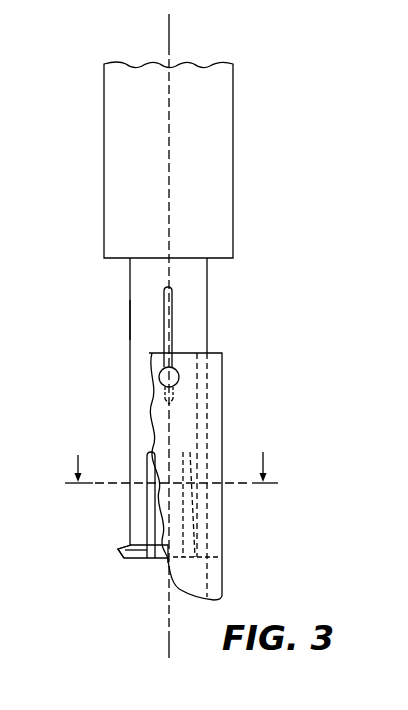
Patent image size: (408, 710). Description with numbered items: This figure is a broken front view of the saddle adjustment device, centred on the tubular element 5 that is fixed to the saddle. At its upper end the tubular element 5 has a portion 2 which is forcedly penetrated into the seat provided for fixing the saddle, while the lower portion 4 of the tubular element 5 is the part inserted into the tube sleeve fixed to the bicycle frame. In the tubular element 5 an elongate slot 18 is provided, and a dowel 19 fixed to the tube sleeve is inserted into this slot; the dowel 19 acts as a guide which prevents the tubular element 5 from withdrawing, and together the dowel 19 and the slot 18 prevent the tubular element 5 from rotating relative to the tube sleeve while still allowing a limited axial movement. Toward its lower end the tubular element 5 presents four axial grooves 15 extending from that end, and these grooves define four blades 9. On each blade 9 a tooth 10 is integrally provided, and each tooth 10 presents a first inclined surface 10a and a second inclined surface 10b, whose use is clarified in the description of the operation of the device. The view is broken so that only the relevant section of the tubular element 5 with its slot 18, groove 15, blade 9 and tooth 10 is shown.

The portion of the tubular element 2 is at (158, 30).
The portion of the tubular element 4 is at (145, 327).
The tubular element 5 is at (215, 299).
The blade 9 is at (155, 569).
The tooth 10 is at (152, 528).
The first inclined surface 10a is at (118, 548).
The second inclined surface 10b is at (125, 556).
The axial groove 15 is at (147, 468).
The elongate slot 18 is at (165, 305).
The dowel 19 is at (212, 375).